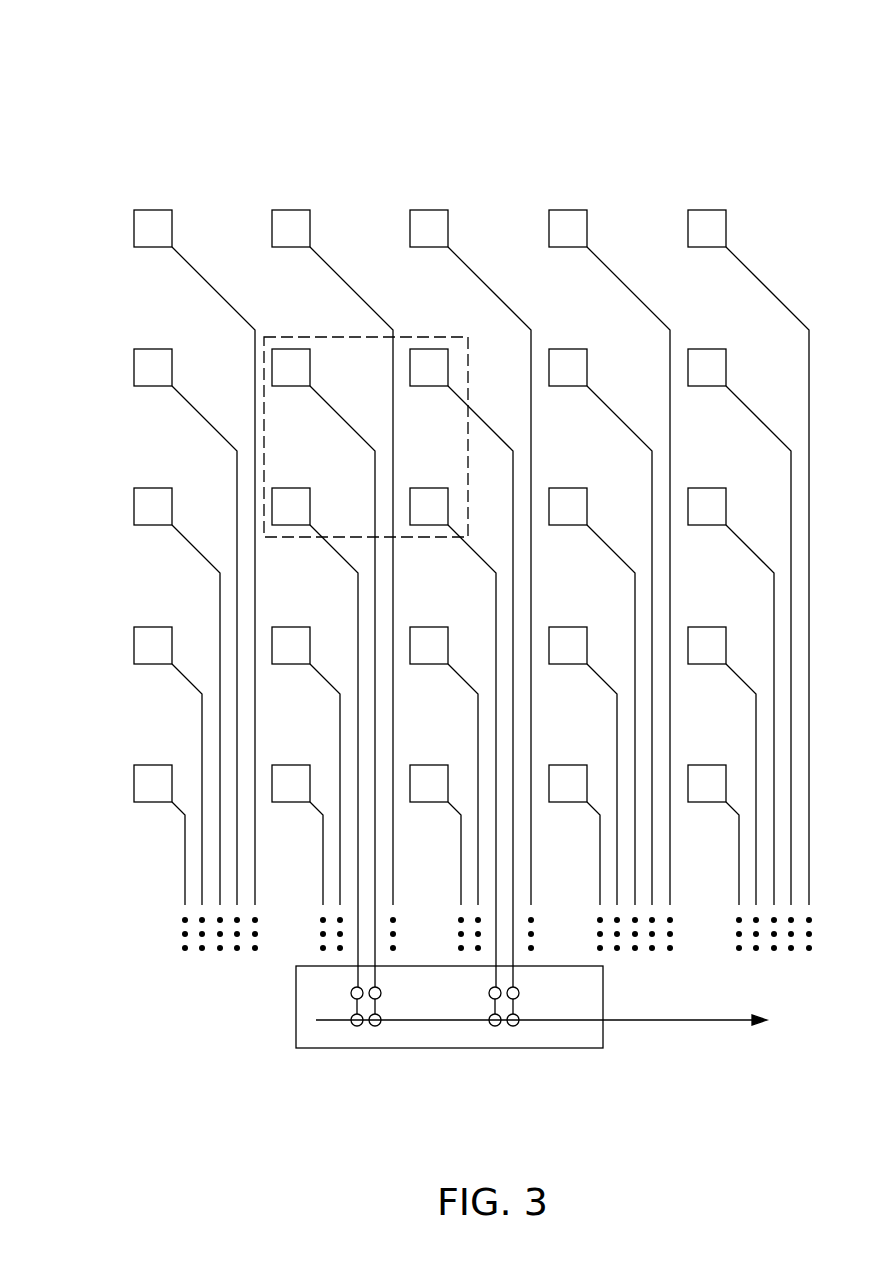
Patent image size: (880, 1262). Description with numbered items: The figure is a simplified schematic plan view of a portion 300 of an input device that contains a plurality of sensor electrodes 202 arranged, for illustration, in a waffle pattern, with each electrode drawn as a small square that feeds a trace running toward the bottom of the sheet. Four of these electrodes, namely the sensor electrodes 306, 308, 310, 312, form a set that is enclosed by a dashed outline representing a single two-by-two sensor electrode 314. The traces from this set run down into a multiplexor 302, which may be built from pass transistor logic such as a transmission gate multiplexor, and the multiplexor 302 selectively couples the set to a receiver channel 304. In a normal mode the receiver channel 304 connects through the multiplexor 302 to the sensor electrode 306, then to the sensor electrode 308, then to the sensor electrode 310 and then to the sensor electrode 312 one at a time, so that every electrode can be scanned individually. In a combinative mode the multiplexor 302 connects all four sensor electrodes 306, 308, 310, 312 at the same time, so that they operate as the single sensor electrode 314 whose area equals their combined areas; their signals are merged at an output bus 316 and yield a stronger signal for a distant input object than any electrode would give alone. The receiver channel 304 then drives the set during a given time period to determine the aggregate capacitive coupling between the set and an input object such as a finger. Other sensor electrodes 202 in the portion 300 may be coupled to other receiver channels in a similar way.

The portion of the input device 300 is at (223, 65).
The sensor electrodes 202 is at (134, 365).
The multiplexor 302 is at (296, 1000).
The receiver channel 304 is at (697, 1022).
The sensor electrode 306 is at (310, 366).
The sensor electrode 308 is at (292, 488).
The sensor electrode 310 is at (447, 362).
The sensor electrode 312 is at (427, 488).
The single 2×2 sensor electrode 314 is at (290, 337).
The output bus 316 is at (430, 1022).